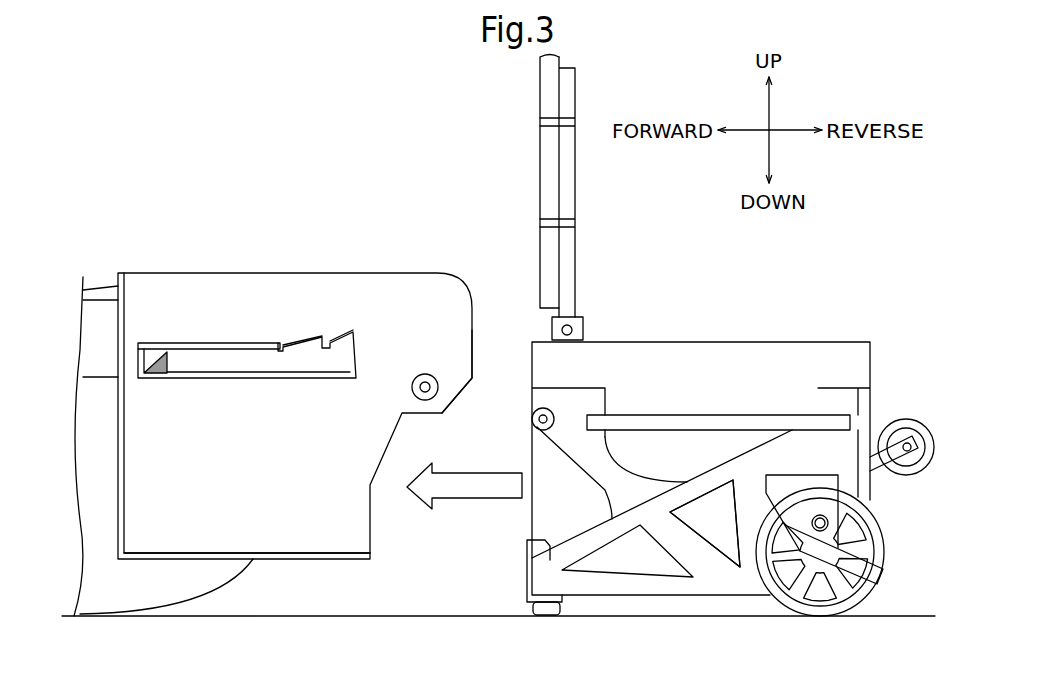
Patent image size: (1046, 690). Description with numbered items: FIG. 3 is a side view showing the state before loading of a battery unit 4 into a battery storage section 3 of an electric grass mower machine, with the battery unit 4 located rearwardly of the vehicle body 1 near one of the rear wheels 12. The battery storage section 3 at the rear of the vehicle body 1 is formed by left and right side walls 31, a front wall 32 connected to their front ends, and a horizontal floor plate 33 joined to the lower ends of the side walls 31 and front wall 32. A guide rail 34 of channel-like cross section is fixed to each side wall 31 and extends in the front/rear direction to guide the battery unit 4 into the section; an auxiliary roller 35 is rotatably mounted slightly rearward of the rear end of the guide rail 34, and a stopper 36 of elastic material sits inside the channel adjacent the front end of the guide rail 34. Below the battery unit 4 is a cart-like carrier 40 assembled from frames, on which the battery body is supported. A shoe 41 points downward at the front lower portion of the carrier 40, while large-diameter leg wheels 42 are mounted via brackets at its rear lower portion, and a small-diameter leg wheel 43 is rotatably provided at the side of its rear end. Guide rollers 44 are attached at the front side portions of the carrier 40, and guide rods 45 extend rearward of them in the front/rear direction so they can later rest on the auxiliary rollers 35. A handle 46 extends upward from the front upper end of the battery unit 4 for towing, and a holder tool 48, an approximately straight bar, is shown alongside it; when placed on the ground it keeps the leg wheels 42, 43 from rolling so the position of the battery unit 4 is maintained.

The vehicle body 1 is at (205, 138).
The battery storage section 3 is at (333, 273).
The battery unit 4 is at (797, 342).
The rear wheel 12 is at (212, 577).
The side wall 31 is at (463, 352).
The front wall 32 is at (118, 490).
The floor plate 33 is at (207, 553).
The guide rail 34 is at (243, 343).
The auxiliary roller 35 is at (425, 374).
The stopper 36 is at (165, 365).
The carrier 40 is at (717, 580).
The shoe 41 is at (530, 610).
The large-diameter leg wheel 42 is at (770, 538).
The small-diameter leg wheel 43 is at (906, 419).
The guide roller 44 is at (532, 420).
The guide rod 45 is at (703, 415).
The handle 46 is at (568, 192).
The holder tool 48 is at (548, 164).